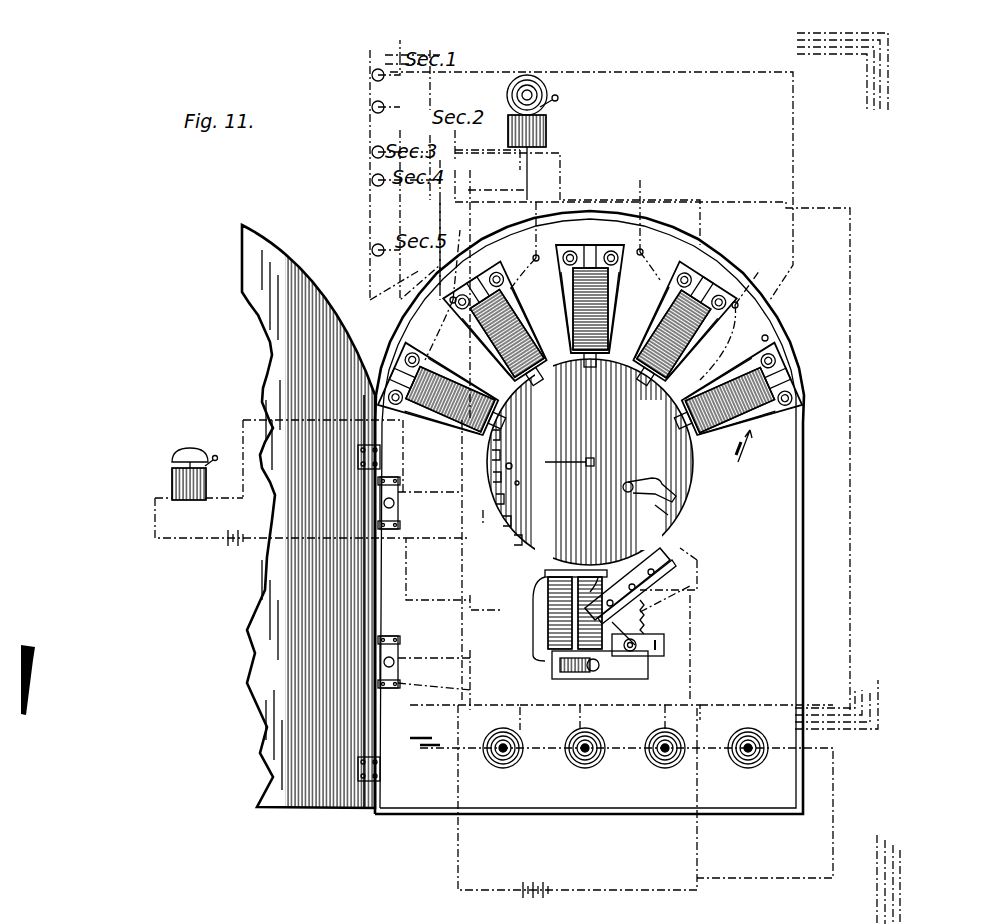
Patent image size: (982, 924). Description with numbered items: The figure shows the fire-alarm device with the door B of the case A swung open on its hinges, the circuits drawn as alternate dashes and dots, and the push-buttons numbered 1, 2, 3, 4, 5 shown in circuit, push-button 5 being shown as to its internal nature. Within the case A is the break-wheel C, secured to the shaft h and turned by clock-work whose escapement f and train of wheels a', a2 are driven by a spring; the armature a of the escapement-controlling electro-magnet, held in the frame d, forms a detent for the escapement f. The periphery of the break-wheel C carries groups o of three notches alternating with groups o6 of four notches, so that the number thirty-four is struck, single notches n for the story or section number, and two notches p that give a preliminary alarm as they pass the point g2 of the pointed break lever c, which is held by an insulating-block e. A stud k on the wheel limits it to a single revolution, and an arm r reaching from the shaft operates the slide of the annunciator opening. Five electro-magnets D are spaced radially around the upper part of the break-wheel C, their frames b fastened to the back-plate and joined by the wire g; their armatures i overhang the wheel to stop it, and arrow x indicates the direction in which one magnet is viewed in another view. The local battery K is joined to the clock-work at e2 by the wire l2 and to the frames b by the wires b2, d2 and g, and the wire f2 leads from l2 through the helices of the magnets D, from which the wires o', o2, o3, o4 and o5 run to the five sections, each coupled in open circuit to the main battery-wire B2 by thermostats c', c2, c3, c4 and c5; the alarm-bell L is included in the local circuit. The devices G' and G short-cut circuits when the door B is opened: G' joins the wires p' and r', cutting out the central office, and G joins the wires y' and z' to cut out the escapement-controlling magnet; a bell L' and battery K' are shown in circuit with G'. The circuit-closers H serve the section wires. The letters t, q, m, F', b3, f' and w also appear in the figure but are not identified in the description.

The case A is at (589, 512).
The door B is at (285, 612).
The break-wheel C is at (590, 462).
The electro-magnets D is at (590, 349).
The electric generating-battery K is at (520, 664).
The alarm-bell L is at (524, 137).
The bell L' is at (195, 462).
The battery K' is at (231, 549).
The circuit-breaker G is at (396, 653).
The circuit-breaker G' is at (401, 503).
The circuit-closers H is at (588, 755).
The escapement f is at (562, 615).
The frame d is at (552, 655).
The armature lever t is at (633, 591).
The insulating-block e is at (602, 574).
The shaft h is at (577, 461).
The arm r is at (551, 440).
The wire g is at (596, 280).
The frames b is at (640, 346).
The wire o' is at (591, 173).
The wire o2 is at (577, 188).
The wire o3 is at (652, 438).
The wire o4 is at (470, 295).
The wire o5 is at (420, 215).
The groups of four notches o6 is at (508, 429).
The wire d2 is at (491, 152).
The wire l2 is at (626, 716).
The wire f2 is at (586, 560).
The main battery-wire B2 is at (471, 833).
The wires w is at (847, 478).
The arrow x is at (747, 444).
The push-button 1 is at (764, 728).
The push-button 2 is at (684, 728).
The push-button 3 is at (606, 728).
The push-button 4 is at (523, 728).
The push-button 5 is at (426, 729).
The thermostats c' is at (383, 60).
The thermostats c2 is at (385, 96).
The thermostats c3 is at (369, 143).
The thermostats c4 is at (369, 175).
The thermostats c5 is at (380, 258).
The wire r' is at (428, 479).
The wire p' is at (438, 590).
The wire z' is at (417, 648).
The wire y' is at (417, 689).
The clock-work connection e2 is at (643, 490).
The contact-point g2 is at (653, 518).
The armatures i is at (551, 403).
The pin q is at (506, 443).
The single notches n is at (678, 433).
The pin m is at (689, 485).
The groups of three notches o is at (620, 389).
The stud k is at (579, 556).
The notches p is at (603, 551).
The break lever c is at (630, 551).
The rail F' is at (663, 575).
The wire b2 is at (636, 276).
The frame b3 is at (556, 283).
The spring f' is at (628, 326).
The armature a is at (434, 305).
The clock-wheel a' is at (710, 343).
The clock-wheel a2 is at (426, 387).